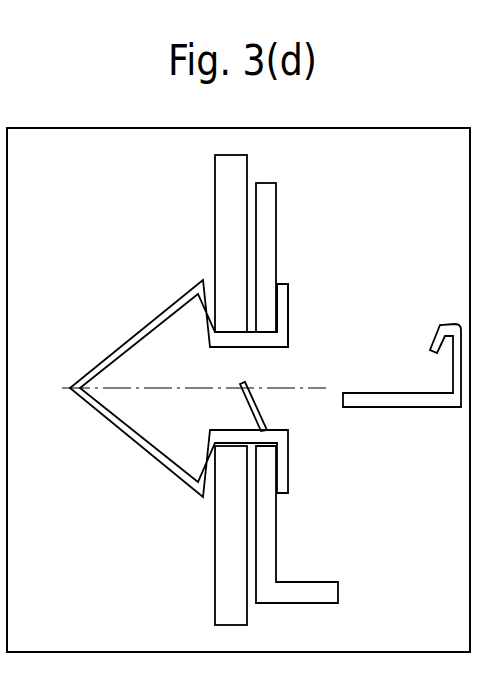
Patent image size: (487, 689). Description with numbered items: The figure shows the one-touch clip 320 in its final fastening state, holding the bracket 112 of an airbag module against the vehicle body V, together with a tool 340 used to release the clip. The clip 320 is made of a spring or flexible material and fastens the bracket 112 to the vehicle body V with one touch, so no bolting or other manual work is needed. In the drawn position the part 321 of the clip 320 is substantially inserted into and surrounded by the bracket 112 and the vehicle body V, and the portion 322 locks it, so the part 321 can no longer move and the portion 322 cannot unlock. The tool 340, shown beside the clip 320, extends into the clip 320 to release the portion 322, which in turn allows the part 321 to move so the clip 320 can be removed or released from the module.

The one-touch clip 320 is at (110, 328).
The part of the clip 321 is at (253, 347).
The locking portion 322 is at (258, 409).
The tool 340 is at (381, 392).
The bracket 112 is at (277, 543).
The vehicle body V is at (221, 593).